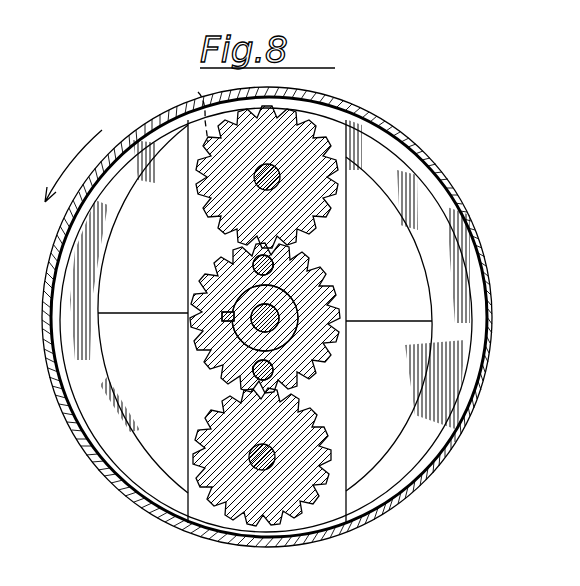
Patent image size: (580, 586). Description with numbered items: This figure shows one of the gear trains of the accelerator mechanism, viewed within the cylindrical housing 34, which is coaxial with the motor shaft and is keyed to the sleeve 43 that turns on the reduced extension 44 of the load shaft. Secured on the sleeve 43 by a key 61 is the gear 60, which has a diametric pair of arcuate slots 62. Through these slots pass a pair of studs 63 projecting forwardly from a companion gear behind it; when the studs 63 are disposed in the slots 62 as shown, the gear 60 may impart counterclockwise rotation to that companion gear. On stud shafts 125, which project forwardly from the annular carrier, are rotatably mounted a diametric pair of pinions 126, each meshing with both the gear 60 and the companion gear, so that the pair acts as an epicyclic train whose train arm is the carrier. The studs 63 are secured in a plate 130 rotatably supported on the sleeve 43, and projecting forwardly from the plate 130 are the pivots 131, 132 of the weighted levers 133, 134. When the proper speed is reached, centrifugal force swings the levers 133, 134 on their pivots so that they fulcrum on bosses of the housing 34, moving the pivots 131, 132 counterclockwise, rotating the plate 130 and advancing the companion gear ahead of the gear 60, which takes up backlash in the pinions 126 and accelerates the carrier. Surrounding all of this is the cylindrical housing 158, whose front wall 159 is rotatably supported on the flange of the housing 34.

The cylindrical housing 34 is at (453, 265).
The sleeve 43 is at (288, 308).
The reduced extension 44 is at (278, 326).
The gear 60 is at (202, 296).
The key 61 is at (228, 318).
The arcuate slots 62 is at (249, 259).
The studs 63 is at (277, 268).
The stud shafts 125 is at (277, 180).
The pinions 126 is at (223, 197).
The plate 130 is at (200, 512).
The pivot 131 is at (323, 488).
The pivot 132 is at (184, 108).
The weighted lever 133 is at (404, 390).
The weighted lever 134 is at (156, 268).
The cylindrical housing 158 is at (450, 188).
The front wall 159 is at (460, 223).